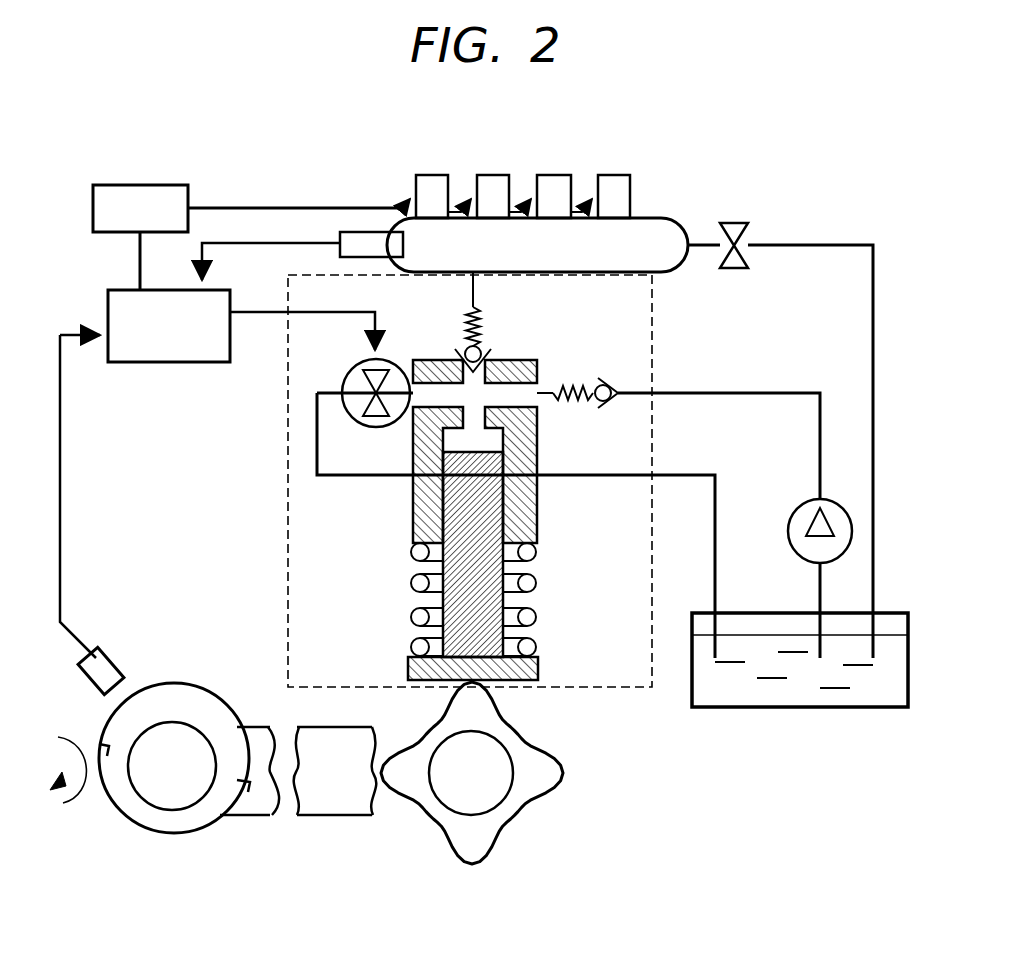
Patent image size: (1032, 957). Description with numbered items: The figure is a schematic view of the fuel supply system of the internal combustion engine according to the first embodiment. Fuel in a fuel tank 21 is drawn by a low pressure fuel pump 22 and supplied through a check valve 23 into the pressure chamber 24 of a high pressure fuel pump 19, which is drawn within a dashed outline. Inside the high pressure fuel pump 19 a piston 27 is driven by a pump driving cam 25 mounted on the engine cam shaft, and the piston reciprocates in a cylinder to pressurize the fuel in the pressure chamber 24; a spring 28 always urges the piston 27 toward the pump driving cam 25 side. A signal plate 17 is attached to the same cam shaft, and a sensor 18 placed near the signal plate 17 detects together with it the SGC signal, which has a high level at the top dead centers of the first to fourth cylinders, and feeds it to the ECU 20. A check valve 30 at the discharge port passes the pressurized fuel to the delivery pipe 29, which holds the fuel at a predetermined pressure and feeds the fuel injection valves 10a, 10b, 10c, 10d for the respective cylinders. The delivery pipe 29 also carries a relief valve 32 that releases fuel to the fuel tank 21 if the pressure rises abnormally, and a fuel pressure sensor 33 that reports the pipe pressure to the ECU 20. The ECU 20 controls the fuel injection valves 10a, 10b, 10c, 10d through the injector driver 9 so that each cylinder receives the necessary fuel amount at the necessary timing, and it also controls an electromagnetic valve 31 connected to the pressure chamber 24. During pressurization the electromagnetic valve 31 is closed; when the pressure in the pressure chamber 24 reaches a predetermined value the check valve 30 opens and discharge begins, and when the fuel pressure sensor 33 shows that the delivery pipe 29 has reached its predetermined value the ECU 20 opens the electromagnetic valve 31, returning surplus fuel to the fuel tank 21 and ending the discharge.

The injector driver 9 is at (115, 185).
The fuel injection valve 10a is at (430, 175).
The fuel injection valve 10b is at (492, 175).
The fuel injection valve 10c is at (554, 175).
The fuel injection valve 10d is at (615, 175).
The signal plate 17 is at (130, 828).
The sensor 18 is at (110, 660).
The high pressure fuel pump 19 is at (653, 324).
The ECU 20 is at (118, 290).
The fuel tank 21 is at (880, 694).
The low pressure fuel pump 22 is at (833, 504).
The check valve 23 is at (582, 386).
The pressure chamber 24 is at (487, 445).
The pump driving cam 25 is at (545, 758).
The piston 27 is at (460, 527).
The spring 28 is at (410, 583).
The delivery pipe 29 is at (660, 218).
The check valve 30 is at (486, 322).
The electromagnetic valve 31 is at (360, 372).
The relief valve 32 is at (740, 223).
The fuel pressure sensor 33 is at (340, 240).